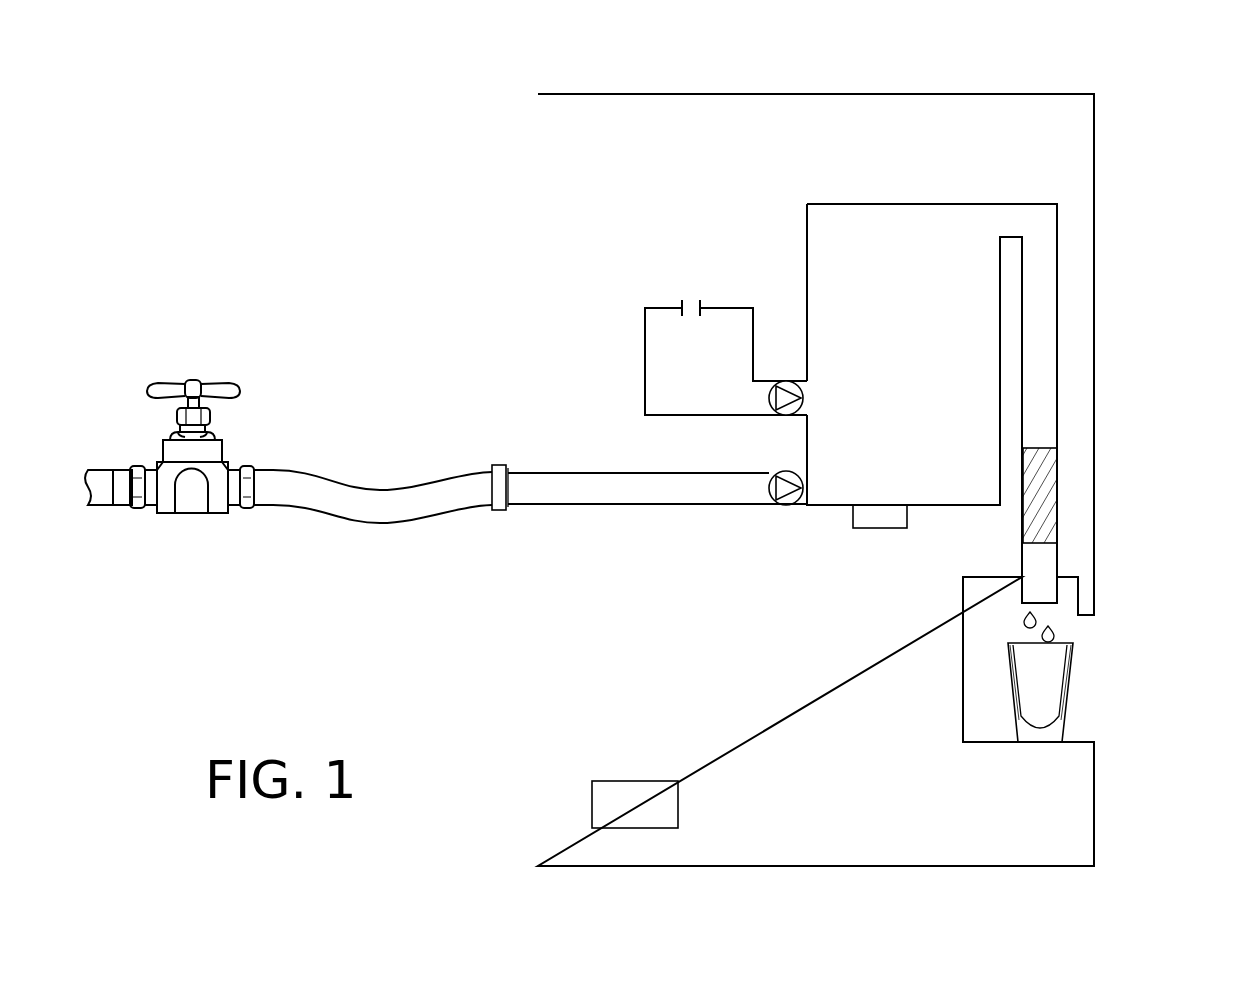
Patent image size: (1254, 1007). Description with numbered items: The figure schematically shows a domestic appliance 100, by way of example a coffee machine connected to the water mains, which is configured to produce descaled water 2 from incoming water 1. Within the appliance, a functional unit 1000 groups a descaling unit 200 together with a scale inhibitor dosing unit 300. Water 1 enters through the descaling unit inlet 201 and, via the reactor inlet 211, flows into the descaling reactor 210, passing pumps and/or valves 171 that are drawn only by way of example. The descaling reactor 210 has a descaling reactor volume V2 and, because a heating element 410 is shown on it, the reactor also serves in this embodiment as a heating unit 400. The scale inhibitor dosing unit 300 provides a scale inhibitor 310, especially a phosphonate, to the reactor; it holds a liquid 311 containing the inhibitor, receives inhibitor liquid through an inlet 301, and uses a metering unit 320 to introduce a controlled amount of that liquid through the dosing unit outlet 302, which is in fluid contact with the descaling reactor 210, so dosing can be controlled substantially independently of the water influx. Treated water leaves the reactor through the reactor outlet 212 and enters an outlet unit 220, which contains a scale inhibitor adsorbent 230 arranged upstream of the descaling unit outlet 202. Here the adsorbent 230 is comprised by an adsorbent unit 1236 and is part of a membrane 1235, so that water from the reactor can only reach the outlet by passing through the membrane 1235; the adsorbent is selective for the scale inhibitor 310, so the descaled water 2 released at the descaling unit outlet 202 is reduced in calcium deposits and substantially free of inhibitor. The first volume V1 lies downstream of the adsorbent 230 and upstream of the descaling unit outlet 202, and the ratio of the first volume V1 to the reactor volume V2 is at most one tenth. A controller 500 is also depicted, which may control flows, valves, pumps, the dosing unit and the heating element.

The domestic appliance 100 is at (1170, 88).
The water 1 is at (367, 517).
The descaling unit inlet 201 is at (493, 456).
The reactor inlet 211 is at (812, 495).
The pumps and/or valves 171 is at (782, 412).
The descaling unit 200 is at (758, 220).
The descaling reactor 210 is at (934, 190).
The reactor outlet 212 is at (1015, 220).
The outlet unit 220 is at (1068, 373).
The scale inhibitor adsorbent 230 is at (1050, 478).
The membrane 1235 is at (1050, 525).
The adsorbent unit 1236 is at (1068, 500).
The first volume V1 is at (1045, 582).
The descaling reactor volume V2 is at (864, 222).
The descaled water 2 is at (1045, 312).
The descaling unit outlet 202 is at (1012, 608).
The scale inhibitor dosing unit 300 is at (630, 274).
The inlet 301 is at (690, 292).
The dosing unit outlet 302 is at (785, 377).
The scale inhibitor 310 is at (645, 375).
The liquid 311 is at (660, 350).
The metering unit 320 is at (630, 210).
The functional unit 1000 is at (662, 290).
The heating unit 400 is at (862, 536).
The heating element 410 is at (887, 517).
The controller 500 is at (588, 805).